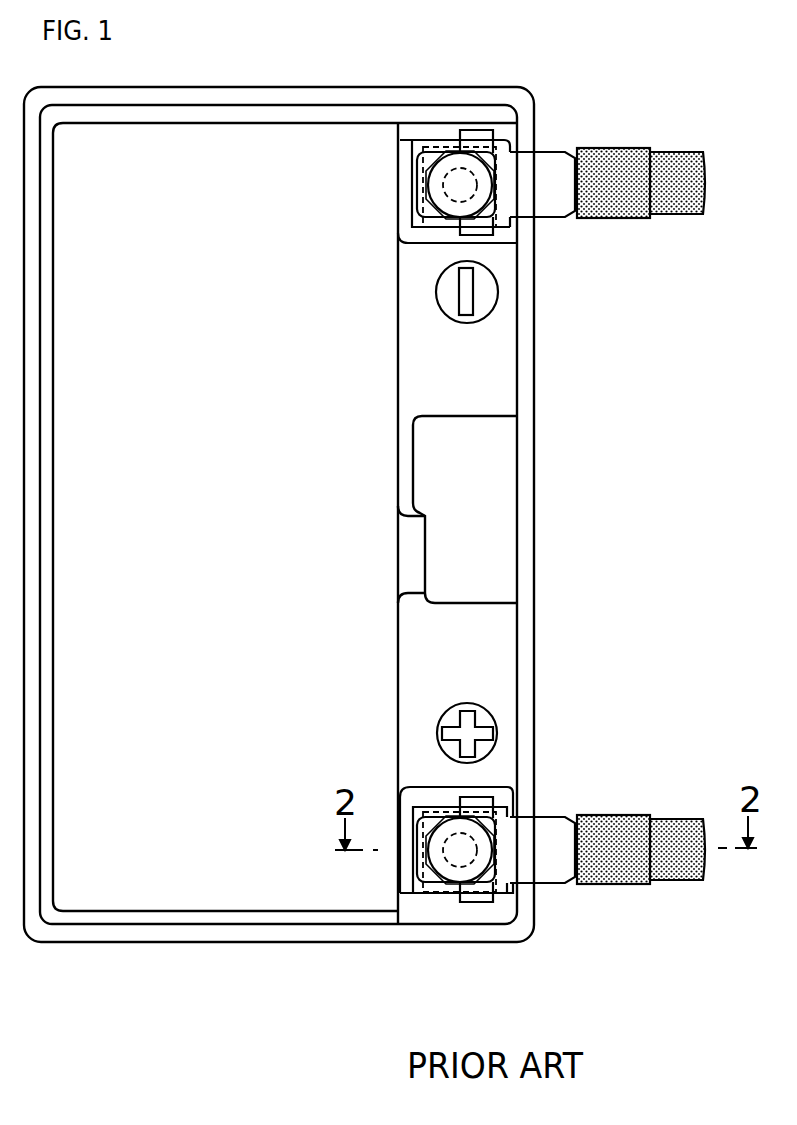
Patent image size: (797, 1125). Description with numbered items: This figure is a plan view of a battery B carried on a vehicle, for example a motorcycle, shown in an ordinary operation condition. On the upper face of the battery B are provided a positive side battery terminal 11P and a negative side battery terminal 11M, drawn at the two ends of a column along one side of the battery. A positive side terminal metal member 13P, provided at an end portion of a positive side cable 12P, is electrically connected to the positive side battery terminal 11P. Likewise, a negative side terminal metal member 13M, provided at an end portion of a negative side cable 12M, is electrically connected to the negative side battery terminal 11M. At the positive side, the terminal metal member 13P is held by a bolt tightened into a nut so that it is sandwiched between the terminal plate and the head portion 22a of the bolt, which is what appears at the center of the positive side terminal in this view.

The battery B is at (228, 559).
The negative side battery terminal 11M is at (438, 222).
The negative side cable 12M is at (685, 163).
The negative side terminal metal member 13M is at (473, 143).
The positive side battery terminal 11P is at (438, 810).
The positive side cable 12P is at (667, 833).
The positive side terminal metal member 13P is at (477, 807).
The head portion of the bolt 22a is at (448, 872).